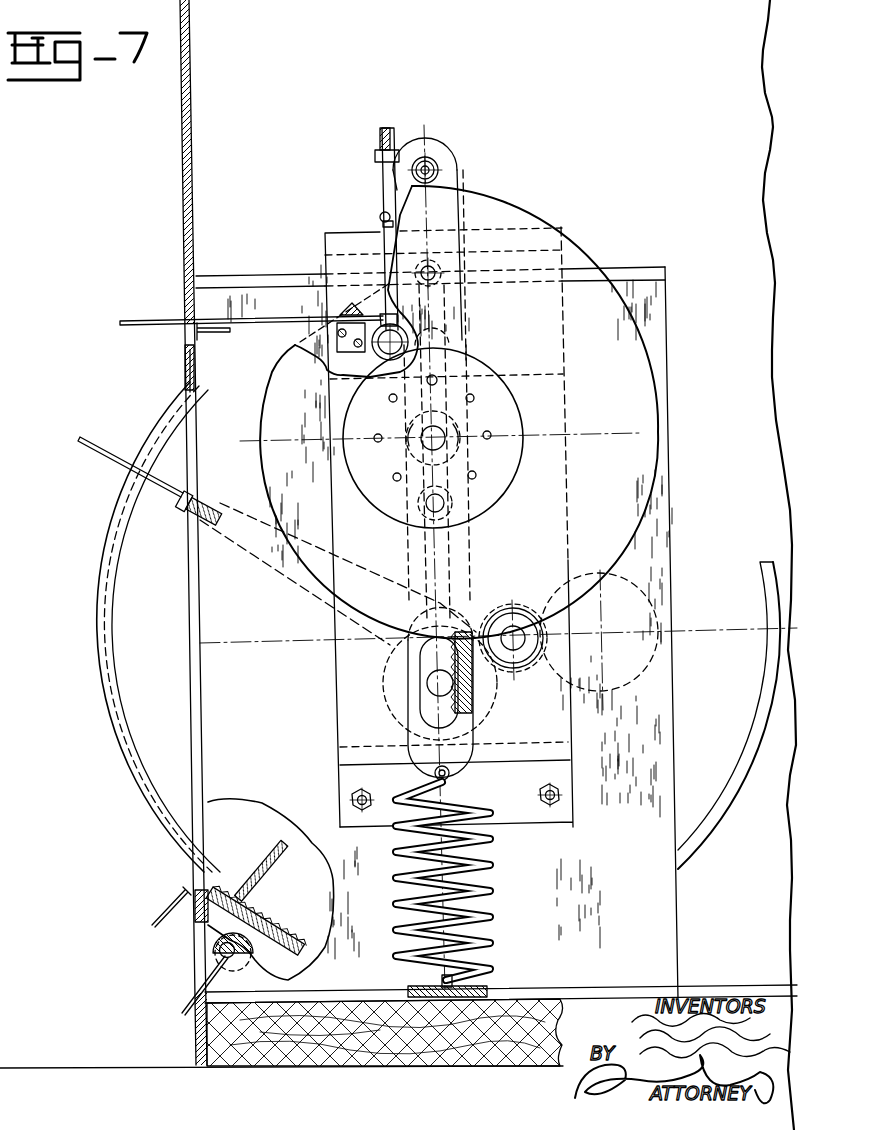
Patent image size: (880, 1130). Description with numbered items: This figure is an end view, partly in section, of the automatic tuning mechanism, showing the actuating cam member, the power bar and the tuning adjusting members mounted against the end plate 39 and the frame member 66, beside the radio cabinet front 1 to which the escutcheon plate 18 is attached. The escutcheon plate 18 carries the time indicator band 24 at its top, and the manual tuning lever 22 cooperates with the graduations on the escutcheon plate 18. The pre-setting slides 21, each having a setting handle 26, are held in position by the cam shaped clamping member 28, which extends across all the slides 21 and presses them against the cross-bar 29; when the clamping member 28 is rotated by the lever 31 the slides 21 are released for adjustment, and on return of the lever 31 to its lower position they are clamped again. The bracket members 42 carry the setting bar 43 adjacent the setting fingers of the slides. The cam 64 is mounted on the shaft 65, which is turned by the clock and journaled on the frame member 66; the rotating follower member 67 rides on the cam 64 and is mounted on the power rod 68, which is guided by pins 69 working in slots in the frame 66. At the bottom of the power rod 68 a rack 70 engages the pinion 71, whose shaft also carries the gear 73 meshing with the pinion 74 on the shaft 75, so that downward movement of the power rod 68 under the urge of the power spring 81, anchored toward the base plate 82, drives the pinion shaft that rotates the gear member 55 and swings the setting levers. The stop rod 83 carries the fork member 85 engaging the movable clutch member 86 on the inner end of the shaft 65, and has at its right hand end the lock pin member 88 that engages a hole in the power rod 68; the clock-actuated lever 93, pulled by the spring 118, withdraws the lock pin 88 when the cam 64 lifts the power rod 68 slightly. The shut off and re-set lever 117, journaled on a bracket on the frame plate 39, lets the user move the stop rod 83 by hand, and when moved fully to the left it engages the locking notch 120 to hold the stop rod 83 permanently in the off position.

The wall 1 is at (182, 207).
The shut off and re-set lever 117 is at (170, 322).
The escutcheon plate 18 is at (183, 350).
The time indicator band 24 is at (186, 375).
The manual tuning lever 22 is at (94, 442).
The setting bar 43 is at (186, 508).
The bracket members 42 is at (258, 547).
The pre-setting slides 21 is at (156, 837).
The setting handle 26 is at (162, 913).
The lever 31 is at (190, 1000).
The cross-bar 29 is at (258, 869).
The cam shaped clamping member 28 is at (250, 912).
The frame member 66 is at (325, 262).
The locking notch 120 is at (340, 342).
The lock pin member 88 is at (378, 362).
The fork member 85 is at (388, 357).
The spring 118 is at (380, 217).
The clock-actuated lever 93 is at (384, 206).
The rotating follower member 67 is at (433, 166).
The power rod 68 is at (455, 180).
The cam 64 is at (542, 224).
The end plate 39 is at (666, 303).
The stop rod 83 is at (443, 272).
The pins 69 is at (441, 283).
The movable clutch member 86 is at (408, 450).
The shaft 65 is at (446, 444).
The pinion 74 is at (521, 624).
The shaft 75 is at (519, 660).
The gear 73 is at (386, 668).
The pinion 71 is at (430, 693).
The rack 70 is at (474, 698).
The gear member 55 is at (652, 652).
The power spring 81 is at (493, 863).
The base plate 82 is at (547, 992).